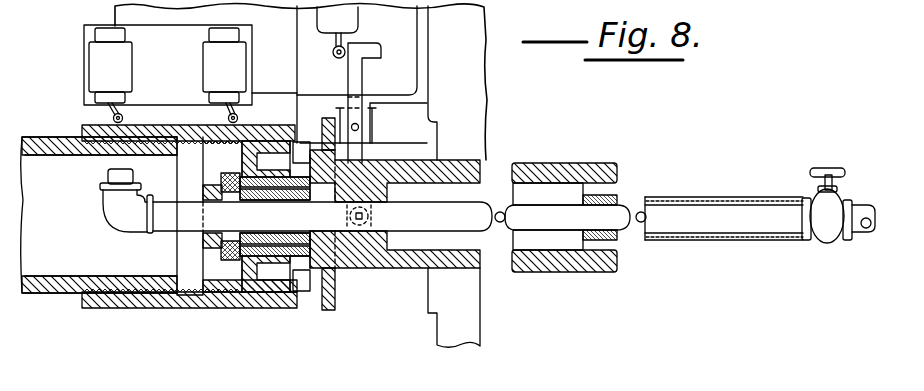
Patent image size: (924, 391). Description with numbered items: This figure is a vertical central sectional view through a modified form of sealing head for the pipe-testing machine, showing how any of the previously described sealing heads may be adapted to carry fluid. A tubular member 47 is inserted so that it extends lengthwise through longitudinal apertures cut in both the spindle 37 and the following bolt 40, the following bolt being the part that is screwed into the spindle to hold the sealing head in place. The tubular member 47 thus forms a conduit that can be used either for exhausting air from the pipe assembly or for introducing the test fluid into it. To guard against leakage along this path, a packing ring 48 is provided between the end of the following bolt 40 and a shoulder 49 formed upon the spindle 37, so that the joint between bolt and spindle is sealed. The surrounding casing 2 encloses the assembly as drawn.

The casing body 2 is at (60, 295).
The spindle 37 is at (375, 264).
The following bolt 40 is at (203, 238).
The tubular member 47 is at (165, 207).
The packing ring 48 is at (307, 230).
The shoulder 49 is at (318, 268).